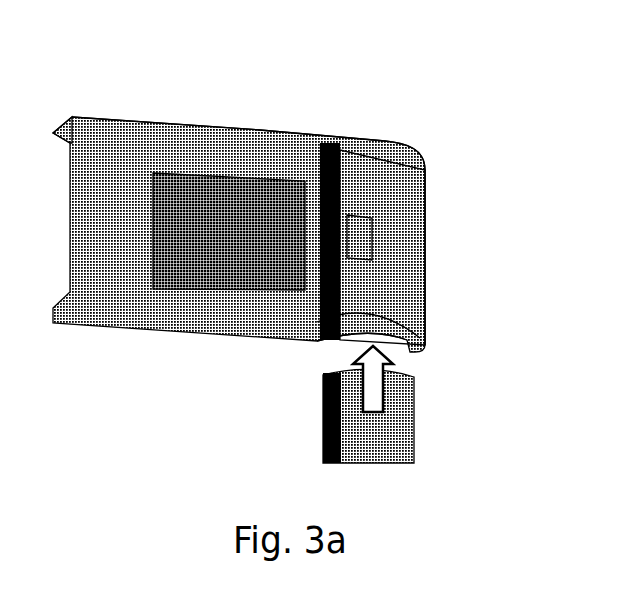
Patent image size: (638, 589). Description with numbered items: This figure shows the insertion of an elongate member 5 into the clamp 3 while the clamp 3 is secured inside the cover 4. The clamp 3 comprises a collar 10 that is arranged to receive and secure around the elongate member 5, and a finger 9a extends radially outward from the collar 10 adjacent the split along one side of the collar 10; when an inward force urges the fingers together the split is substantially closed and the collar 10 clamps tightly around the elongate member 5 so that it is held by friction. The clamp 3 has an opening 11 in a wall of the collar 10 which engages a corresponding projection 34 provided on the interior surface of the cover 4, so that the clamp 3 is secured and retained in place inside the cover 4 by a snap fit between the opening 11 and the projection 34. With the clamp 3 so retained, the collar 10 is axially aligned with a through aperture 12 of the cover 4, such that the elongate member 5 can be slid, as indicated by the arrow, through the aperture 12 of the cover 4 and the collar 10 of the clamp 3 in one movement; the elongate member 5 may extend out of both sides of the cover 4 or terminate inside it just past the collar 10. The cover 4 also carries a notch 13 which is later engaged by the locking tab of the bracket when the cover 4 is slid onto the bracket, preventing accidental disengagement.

The clamp 3 is at (300, 170).
The cover 4 is at (262, 130).
The elongate member 5 is at (413, 428).
The finger 9a is at (235, 235).
The collar 10 is at (370, 303).
The opening 11 is at (362, 205).
The through aperture 12 is at (402, 152).
The notch 13 is at (160, 148).
The projection 34 is at (365, 238).